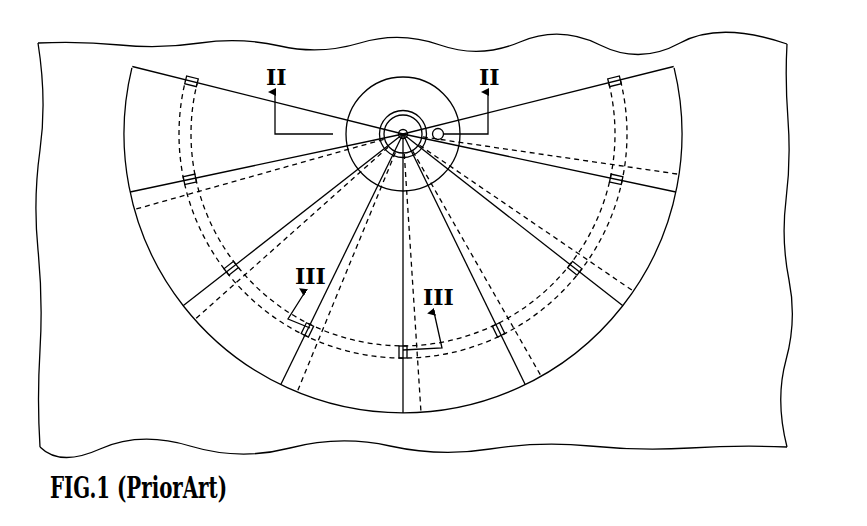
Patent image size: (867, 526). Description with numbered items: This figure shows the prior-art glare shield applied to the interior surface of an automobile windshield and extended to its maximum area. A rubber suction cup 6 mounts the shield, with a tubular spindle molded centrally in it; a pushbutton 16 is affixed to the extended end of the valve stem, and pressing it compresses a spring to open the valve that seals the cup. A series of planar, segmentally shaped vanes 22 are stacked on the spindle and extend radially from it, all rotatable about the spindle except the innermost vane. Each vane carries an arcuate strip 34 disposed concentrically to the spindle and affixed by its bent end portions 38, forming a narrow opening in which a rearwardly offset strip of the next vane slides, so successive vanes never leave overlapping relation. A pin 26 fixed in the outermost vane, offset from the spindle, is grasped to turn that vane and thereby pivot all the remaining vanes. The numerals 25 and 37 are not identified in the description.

The rubber suction cup 6 is at (348, 100).
The pushbutton 16 is at (405, 124).
The vanes 22 is at (225, 98).
The center pin 25 is at (408, 126).
The pin 26 is at (444, 130).
The arcuate strip 34 is at (178, 143).
The fold line 37 is at (260, 307).
The end portions 38 is at (196, 174).